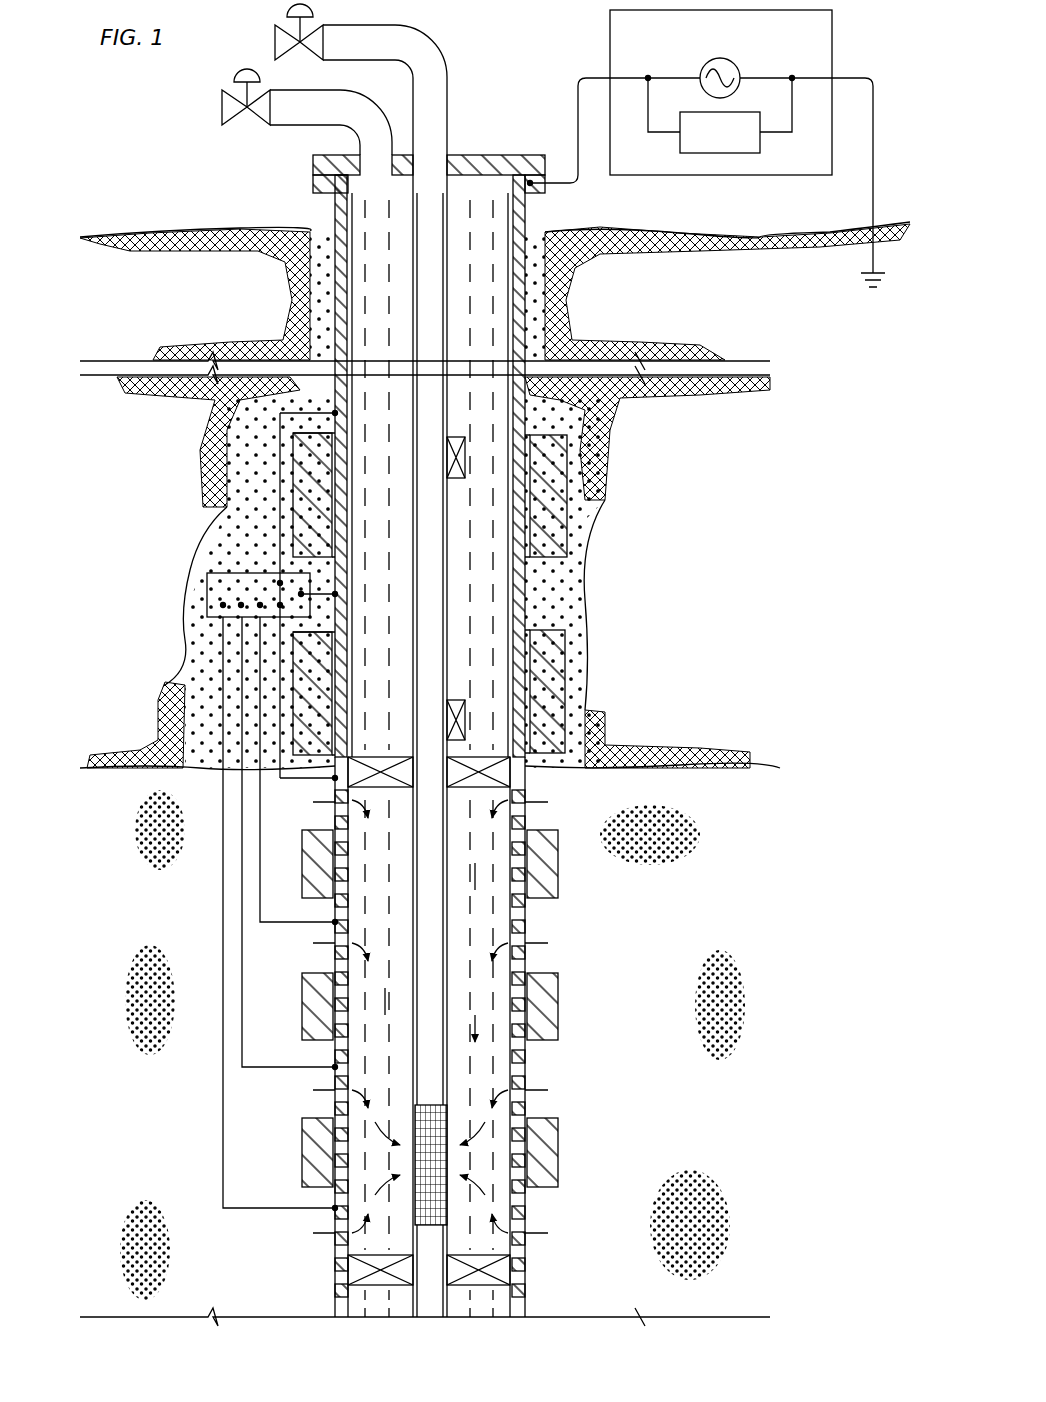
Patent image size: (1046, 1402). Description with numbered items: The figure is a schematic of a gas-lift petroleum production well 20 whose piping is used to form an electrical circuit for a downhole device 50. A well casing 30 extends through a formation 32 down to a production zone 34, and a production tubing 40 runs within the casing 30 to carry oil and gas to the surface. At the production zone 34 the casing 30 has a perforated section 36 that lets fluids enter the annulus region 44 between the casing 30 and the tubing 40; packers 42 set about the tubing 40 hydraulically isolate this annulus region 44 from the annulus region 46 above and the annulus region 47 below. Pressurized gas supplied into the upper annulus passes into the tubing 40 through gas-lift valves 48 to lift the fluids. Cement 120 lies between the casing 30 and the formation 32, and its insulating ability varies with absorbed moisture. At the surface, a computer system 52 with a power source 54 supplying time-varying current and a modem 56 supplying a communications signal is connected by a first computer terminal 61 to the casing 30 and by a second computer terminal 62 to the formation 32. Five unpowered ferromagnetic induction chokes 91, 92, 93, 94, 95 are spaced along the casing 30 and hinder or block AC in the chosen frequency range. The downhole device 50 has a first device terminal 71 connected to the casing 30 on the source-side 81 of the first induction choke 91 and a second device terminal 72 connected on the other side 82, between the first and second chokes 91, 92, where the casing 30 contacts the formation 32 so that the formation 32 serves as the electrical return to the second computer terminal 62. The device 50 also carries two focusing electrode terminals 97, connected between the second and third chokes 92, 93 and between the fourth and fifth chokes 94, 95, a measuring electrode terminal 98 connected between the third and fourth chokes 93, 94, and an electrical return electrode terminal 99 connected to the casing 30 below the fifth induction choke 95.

The petroleum production well 20 is at (490, 96).
The well casing 30 is at (532, 203).
The formation 32 is at (199, 304).
The production zone 34 is at (139, 1159).
The perforated section 36 is at (527, 802).
The production tubing 40 is at (448, 266).
The packers 42 is at (397, 790).
The annulus region 44 is at (492, 945).
The annulus region above the production zone 46 is at (396, 542).
The annulus region below the production zone 47 is at (385, 1312).
The gas-lift valves 48 is at (456, 437).
The downhole device 50 is at (207, 595).
The surface computer system 52 is at (835, 58).
The surface power source 54 is at (742, 70).
The surface modem 56 is at (762, 148).
The first computer terminal 61 is at (578, 122).
The second computer terminal 62 is at (875, 152).
The first device terminal 71 is at (280, 540).
The second device terminal 72 is at (338, 596).
The source-side of the first induction choke 81 is at (552, 413).
The other side of the first induction choke 82 is at (552, 597).
The first induction choke 91 is at (332, 478).
The second induction choke 92 is at (332, 710).
The third induction choke 93 is at (333, 875).
The fourth induction choke 94 is at (302, 1003).
The fifth induction choke 95 is at (302, 1152).
The focusing electrode terminals 97 is at (290, 782).
The measuring electrode terminal 98 is at (287, 925).
The electrical return electrode terminal 99 is at (278, 1212).
The cement 120 is at (325, 232).